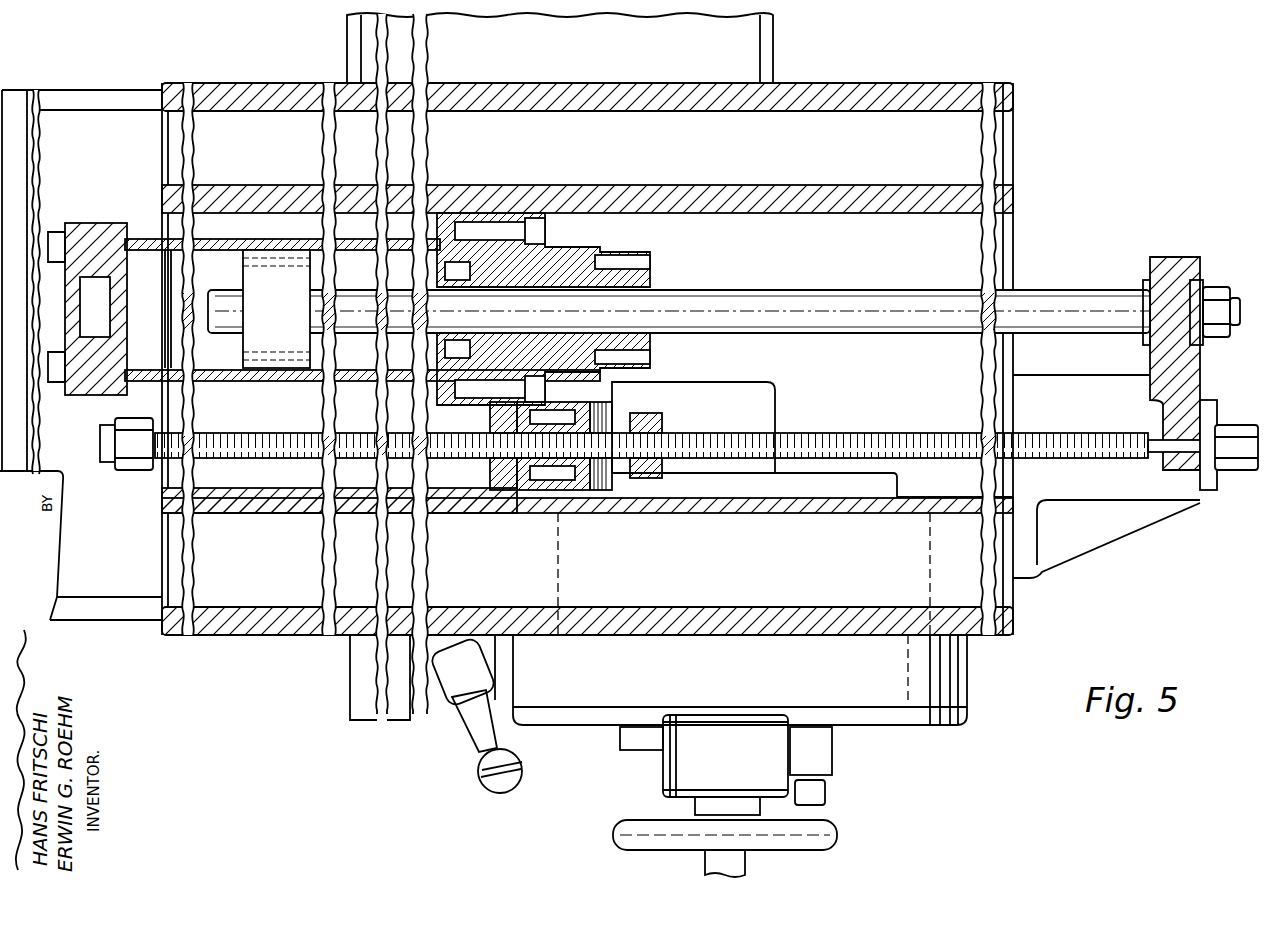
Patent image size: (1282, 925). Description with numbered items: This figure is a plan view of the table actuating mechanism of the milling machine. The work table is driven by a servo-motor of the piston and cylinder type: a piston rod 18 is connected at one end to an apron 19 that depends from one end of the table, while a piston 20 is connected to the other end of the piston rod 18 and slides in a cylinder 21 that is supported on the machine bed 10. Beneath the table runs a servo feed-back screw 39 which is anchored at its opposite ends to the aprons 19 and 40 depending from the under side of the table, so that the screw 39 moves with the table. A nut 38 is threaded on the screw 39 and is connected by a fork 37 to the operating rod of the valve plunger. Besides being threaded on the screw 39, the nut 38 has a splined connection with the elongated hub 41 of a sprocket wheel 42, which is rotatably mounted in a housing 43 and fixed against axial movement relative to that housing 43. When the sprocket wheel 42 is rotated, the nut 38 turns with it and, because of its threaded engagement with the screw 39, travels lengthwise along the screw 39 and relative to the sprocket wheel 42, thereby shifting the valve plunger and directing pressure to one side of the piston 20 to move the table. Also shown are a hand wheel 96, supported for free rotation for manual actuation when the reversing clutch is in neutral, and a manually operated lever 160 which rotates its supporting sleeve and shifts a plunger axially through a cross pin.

The machine bed 10 is at (1010, 192).
The piston rod 18 is at (886, 296).
The apron 19 is at (1185, 273).
The piston 20 is at (264, 262).
The cylinder 21 is at (240, 378).
The fork 37 is at (648, 480).
The nut 38 is at (664, 424).
The servo feed-back screw 39 is at (884, 420).
The apron 40 is at (115, 462).
The elongated hub 41 is at (492, 483).
The sprocket wheel 42 is at (594, 492).
The housing 43 is at (535, 490).
The hand wheel 96 is at (838, 836).
The lever 160 is at (478, 727).